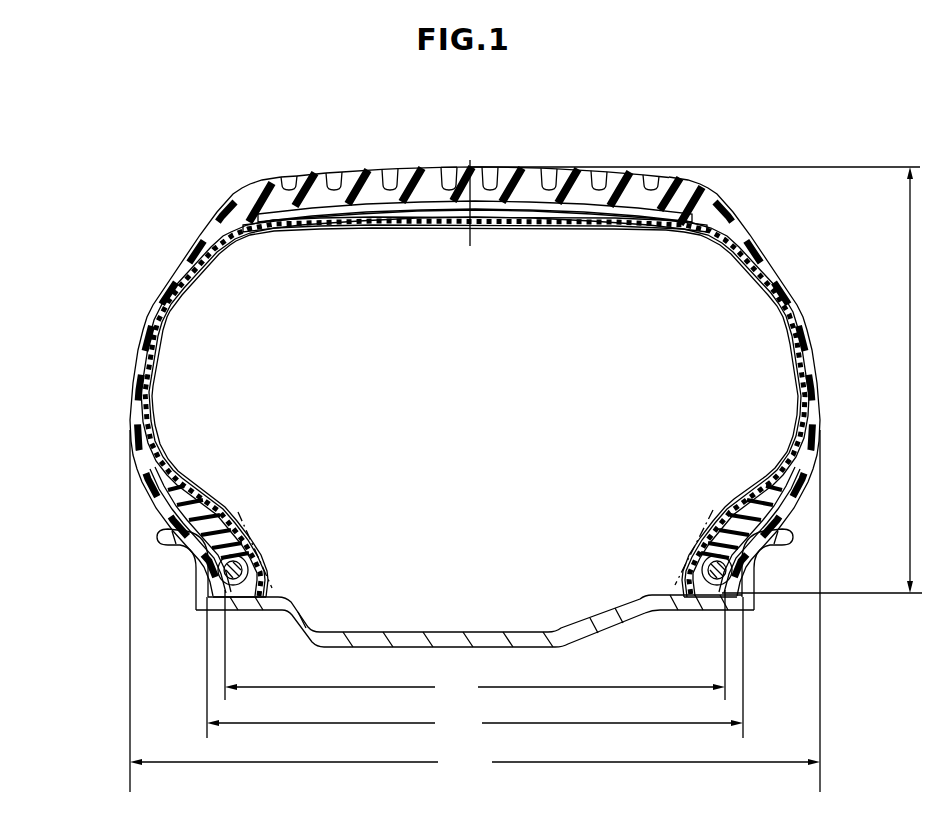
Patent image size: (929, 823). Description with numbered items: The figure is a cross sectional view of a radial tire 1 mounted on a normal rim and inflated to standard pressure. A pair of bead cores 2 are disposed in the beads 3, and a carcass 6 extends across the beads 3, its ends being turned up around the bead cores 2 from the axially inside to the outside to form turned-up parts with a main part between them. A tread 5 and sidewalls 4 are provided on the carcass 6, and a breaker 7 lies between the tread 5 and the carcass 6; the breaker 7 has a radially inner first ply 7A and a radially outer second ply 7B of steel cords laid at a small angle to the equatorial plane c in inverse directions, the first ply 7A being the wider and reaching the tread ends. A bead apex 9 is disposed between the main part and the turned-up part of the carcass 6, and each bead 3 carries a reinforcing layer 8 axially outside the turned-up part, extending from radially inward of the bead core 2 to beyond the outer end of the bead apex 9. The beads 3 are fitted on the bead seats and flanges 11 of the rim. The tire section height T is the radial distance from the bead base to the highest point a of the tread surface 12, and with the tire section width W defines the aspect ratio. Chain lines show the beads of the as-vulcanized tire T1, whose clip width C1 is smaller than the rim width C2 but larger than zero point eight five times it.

The tire 1 is at (741, 158).
The bead core 2 is at (247, 561).
The bead 3 is at (240, 499).
The sidewall 4 is at (167, 372).
The tread 5 is at (367, 166).
The carcass 6 is at (157, 340).
The breaker 7 is at (465, 159).
The first ply 7A is at (259, 213).
The second ply 7B is at (277, 215).
The reinforcing layer 8 is at (792, 474).
The bead apex 9 is at (180, 492).
The flange 11 is at (191, 551).
The tread surface 12 is at (419, 168).
The highest point of the tread surface a is at (452, 166).
The equatorial plane c is at (472, 158).
The tire section height T is at (696, 380).
The tire in the state after vulcanizing molding T1 is at (273, 583).
The clip width C1 is at (475, 645).
The rim width C2 is at (475, 667).
The tire section width W is at (475, 611).